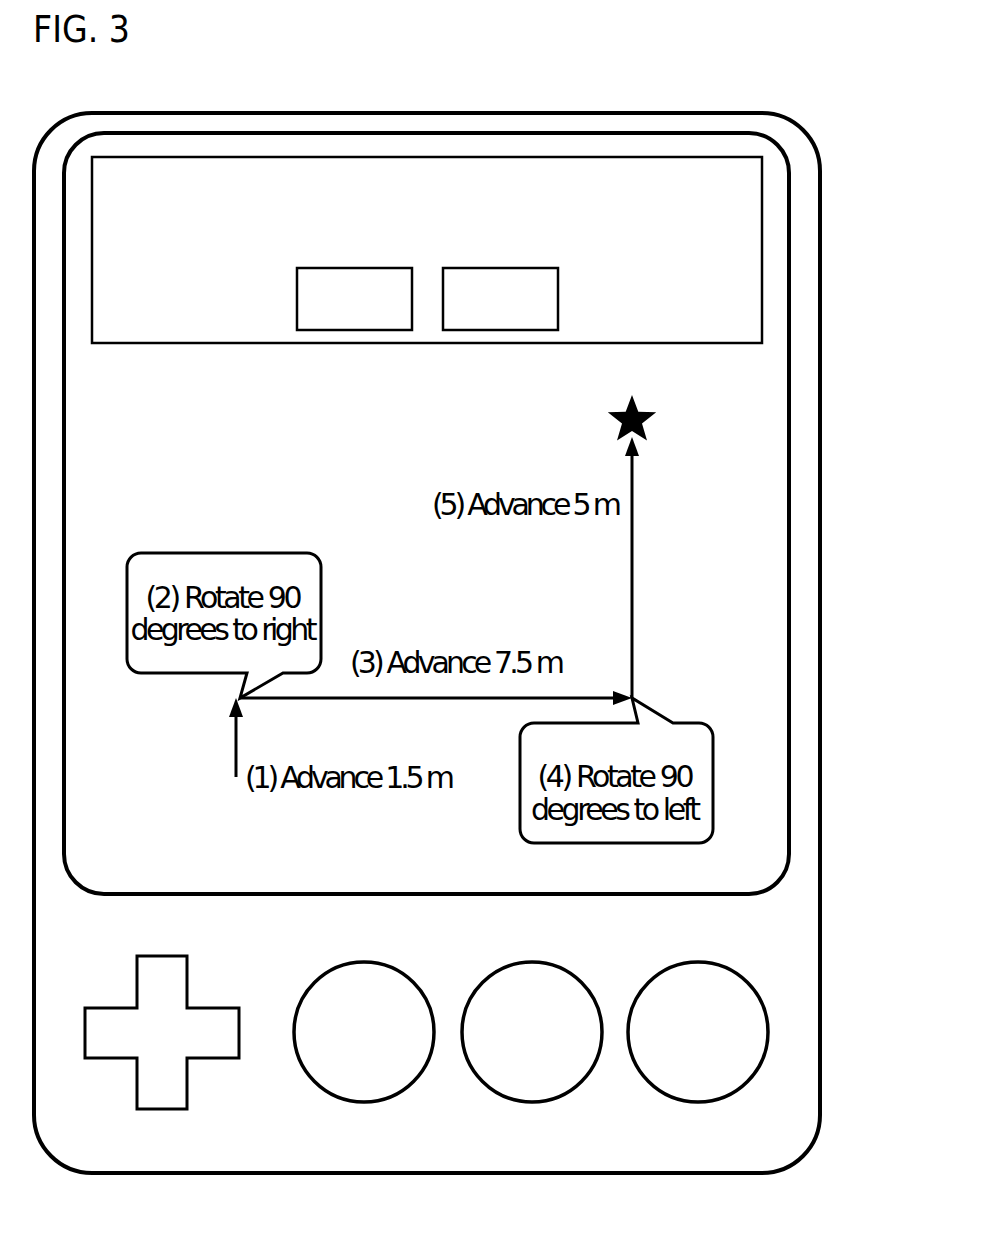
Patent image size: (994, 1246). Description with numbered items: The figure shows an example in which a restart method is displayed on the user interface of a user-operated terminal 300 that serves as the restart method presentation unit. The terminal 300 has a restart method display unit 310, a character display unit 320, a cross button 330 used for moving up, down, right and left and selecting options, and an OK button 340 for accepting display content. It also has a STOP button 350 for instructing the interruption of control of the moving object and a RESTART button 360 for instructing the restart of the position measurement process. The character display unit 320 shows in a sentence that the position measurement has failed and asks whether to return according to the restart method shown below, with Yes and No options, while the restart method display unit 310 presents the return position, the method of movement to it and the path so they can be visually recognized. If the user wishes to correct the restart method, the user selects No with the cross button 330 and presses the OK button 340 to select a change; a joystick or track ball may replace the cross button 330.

The user-operated terminal 300 is at (820, 178).
The restart method display unit 310 is at (789, 478).
The character display unit 320 is at (762, 247).
The cross button 330 is at (187, 975).
The OK button 340 is at (366, 1103).
The STOP button 350 is at (534, 1103).
The RESTART button 360 is at (700, 1103).